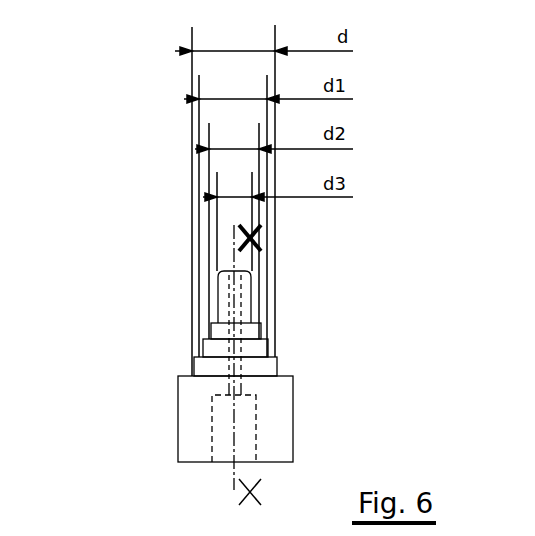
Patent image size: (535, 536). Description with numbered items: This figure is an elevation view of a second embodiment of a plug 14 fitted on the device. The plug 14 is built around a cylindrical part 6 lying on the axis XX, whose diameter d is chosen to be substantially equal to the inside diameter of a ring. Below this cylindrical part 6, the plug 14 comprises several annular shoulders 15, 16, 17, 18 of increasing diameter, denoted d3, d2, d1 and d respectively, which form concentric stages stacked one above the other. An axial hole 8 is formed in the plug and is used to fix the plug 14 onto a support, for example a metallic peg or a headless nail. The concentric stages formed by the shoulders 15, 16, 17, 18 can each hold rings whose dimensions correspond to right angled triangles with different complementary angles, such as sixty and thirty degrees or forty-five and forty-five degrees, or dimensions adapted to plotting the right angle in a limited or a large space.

The cylindrical part 6 is at (218, 272).
The axial hole 8 is at (257, 425).
The plug 14 is at (157, 406).
The annular shoulder 15 is at (211, 326).
The annular shoulder 16 is at (203, 345).
The annular shoulder 17 is at (194, 357).
The annular shoulder 18 is at (192, 376).